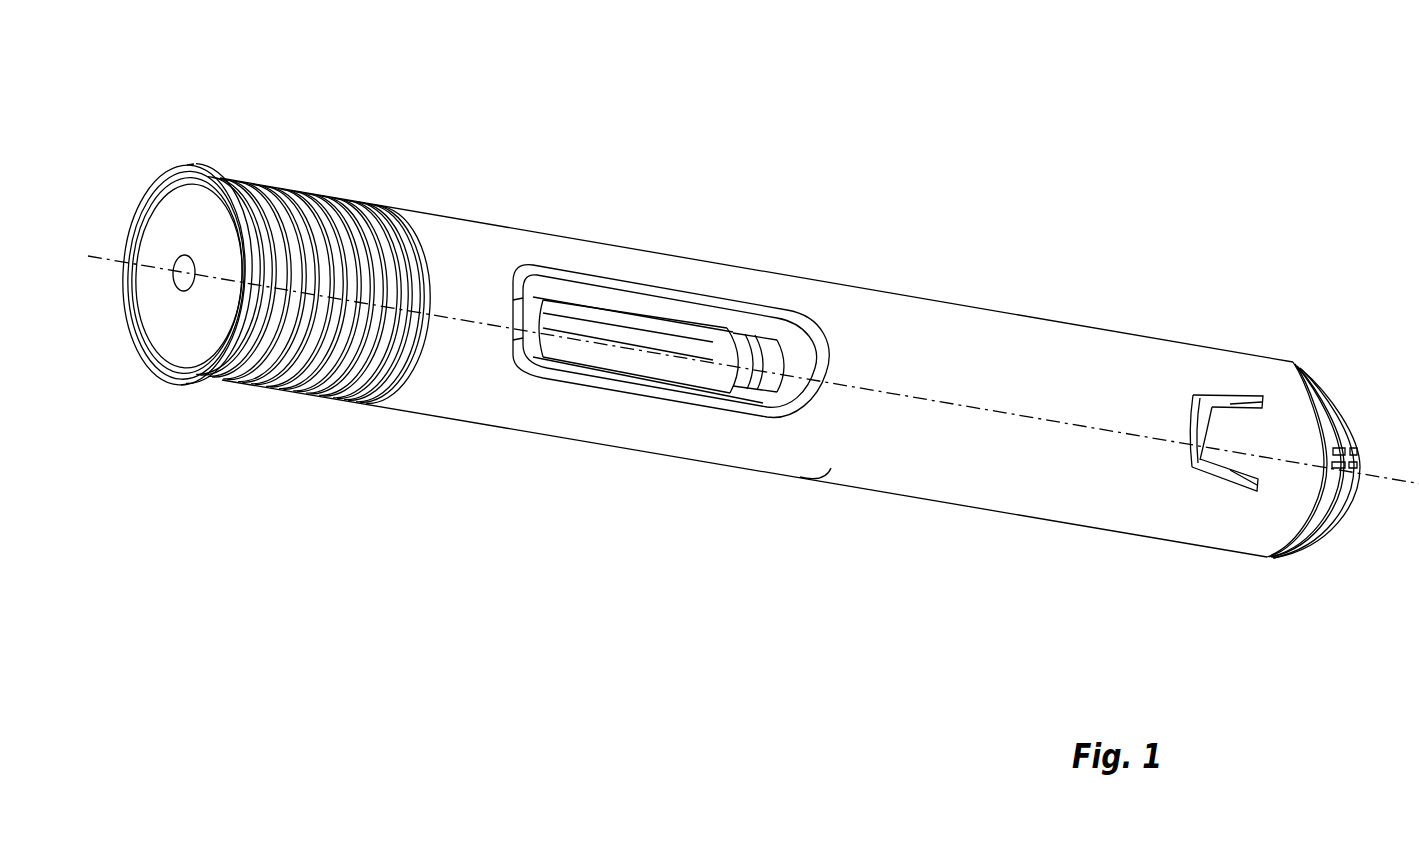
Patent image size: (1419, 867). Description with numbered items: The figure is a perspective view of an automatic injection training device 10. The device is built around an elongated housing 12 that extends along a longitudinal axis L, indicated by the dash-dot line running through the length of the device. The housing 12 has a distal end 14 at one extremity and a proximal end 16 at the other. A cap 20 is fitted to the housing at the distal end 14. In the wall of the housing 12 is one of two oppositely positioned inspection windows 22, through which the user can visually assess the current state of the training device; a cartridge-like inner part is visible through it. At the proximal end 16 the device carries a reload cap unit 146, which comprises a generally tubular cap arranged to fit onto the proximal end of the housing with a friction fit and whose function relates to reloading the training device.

The automatic injection training device 10 is at (845, 232).
The elongated housing 12 is at (1048, 386).
The distal end 14 is at (1298, 312).
The proximal end 16 is at (411, 165).
The cap 20 is at (1307, 540).
The inspection window 22 is at (614, 318).
The reload cap unit 146 is at (333, 380).
The longitudinal axis L is at (99, 252).